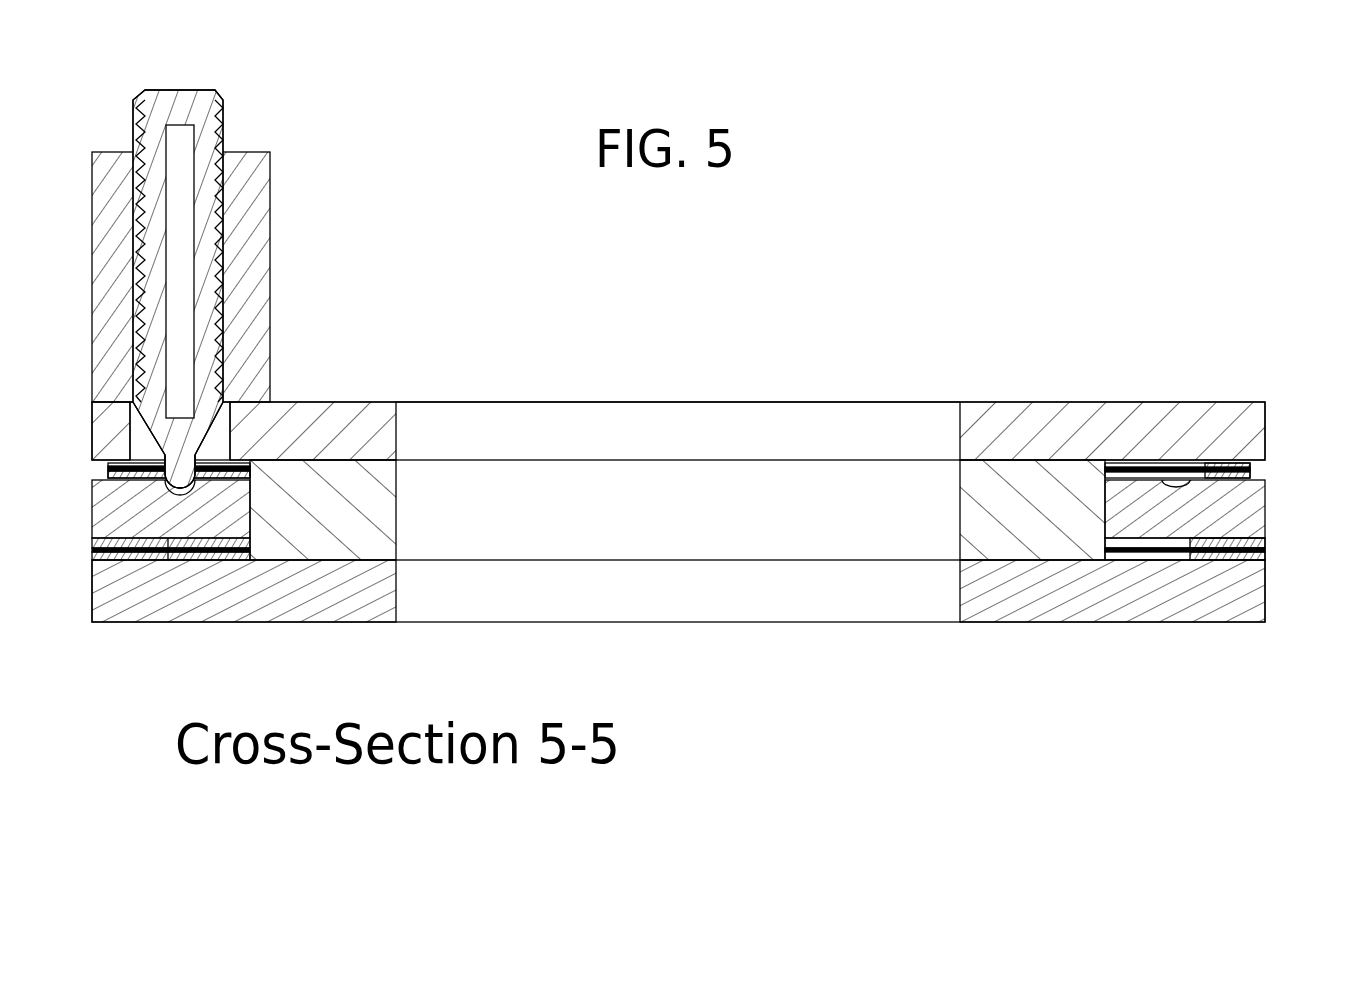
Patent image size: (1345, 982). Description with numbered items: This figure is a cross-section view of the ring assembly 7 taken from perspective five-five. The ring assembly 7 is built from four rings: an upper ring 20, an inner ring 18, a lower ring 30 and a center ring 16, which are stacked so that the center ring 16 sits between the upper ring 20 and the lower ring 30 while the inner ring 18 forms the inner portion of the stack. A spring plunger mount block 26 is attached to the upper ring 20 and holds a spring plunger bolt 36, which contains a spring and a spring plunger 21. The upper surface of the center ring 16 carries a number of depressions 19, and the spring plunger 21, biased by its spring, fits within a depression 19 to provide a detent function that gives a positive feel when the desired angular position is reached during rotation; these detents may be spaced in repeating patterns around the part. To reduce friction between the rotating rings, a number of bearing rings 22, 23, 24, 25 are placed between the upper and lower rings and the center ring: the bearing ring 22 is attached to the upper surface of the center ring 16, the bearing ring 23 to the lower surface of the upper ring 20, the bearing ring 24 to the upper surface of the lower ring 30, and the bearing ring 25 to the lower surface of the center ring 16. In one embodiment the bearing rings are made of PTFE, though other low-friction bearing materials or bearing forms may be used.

The ring assembly 7 is at (689, 364).
The center ring 16 is at (1248, 510).
The inner ring 18 is at (358, 527).
The depression 19 is at (160, 494).
The upper ring 20 is at (1030, 420).
The spring plunger 21 is at (168, 460).
The bearing ring 22 is at (1265, 479).
The bearing ring 23 is at (1248, 473).
The bearing ring 24 is at (1262, 553).
The bearing ring 25 is at (1262, 546).
The spring plunger mount block 26 is at (114, 256).
The lower ring 30 is at (355, 604).
The spring plunger bolt 36 is at (204, 106).